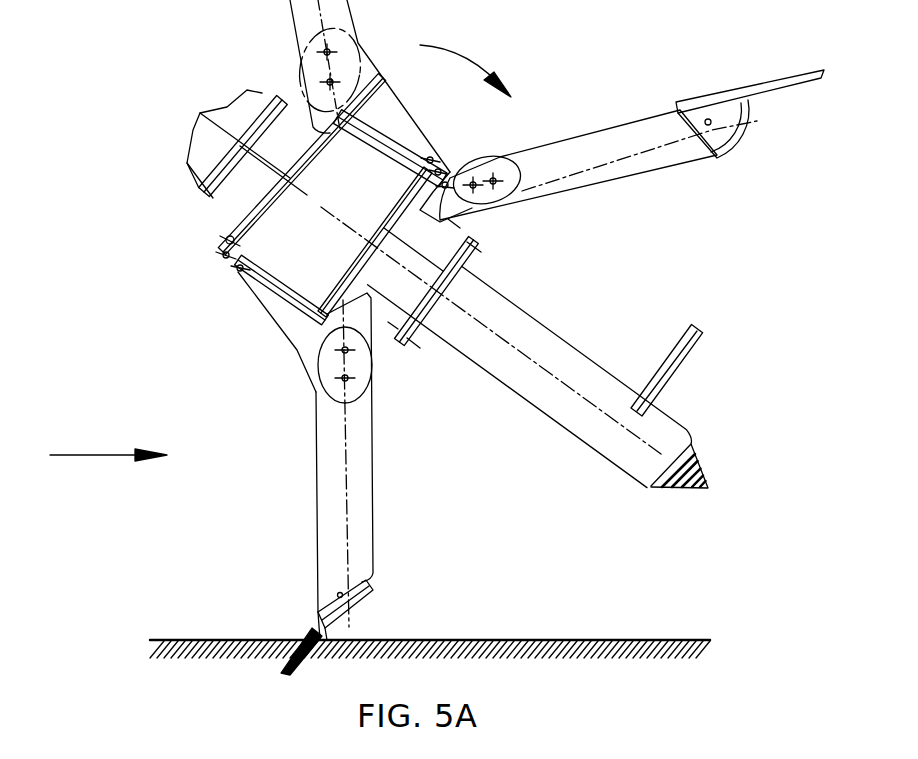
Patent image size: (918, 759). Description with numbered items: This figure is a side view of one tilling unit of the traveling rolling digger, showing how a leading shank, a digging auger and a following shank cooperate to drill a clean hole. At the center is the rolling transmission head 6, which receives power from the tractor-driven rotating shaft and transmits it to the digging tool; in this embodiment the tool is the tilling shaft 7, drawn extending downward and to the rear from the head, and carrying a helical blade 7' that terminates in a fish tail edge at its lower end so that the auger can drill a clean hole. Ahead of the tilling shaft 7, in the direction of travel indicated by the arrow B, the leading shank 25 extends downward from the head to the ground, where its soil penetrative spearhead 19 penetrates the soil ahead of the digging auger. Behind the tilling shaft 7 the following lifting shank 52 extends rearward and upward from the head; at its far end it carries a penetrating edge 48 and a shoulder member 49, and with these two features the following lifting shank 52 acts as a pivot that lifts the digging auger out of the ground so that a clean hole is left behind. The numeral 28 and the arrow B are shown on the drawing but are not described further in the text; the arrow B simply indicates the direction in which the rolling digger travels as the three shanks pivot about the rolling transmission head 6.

The rolling transmission head 6 is at (307, 193).
The tilling shaft 7 is at (506, 347).
The helical blade 7' is at (708, 371).
The auger tip 28 is at (692, 458).
The leading shank 25 is at (337, 520).
The soil penetrative spearhead 19 is at (300, 637).
The following lifting shank 52 is at (658, 165).
The shoulder member 49 is at (733, 157).
The penetrating edge 48 is at (793, 90).
The direction arrow B is at (96, 454).